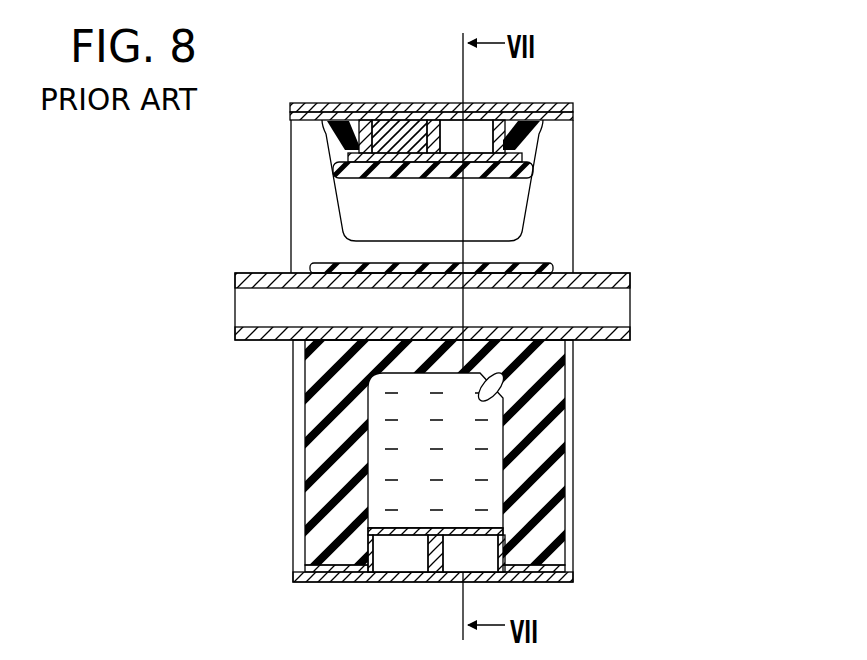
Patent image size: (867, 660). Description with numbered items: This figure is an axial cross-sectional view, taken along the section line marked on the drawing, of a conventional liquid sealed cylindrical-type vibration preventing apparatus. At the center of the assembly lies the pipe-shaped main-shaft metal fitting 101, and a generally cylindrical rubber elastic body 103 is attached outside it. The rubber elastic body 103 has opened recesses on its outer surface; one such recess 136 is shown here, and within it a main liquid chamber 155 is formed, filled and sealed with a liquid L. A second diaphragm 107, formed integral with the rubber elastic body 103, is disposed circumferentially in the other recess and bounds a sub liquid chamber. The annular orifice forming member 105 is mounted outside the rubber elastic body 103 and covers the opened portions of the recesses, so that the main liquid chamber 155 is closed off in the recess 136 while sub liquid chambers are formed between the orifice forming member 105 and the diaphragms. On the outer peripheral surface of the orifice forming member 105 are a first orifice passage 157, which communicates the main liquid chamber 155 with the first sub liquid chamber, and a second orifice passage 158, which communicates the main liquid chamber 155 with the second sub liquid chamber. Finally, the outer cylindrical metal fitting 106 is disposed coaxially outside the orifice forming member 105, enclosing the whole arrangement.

The main-shaft metal fitting 101 is at (590, 288).
The rubber elastic body 103 is at (540, 452).
The orifice forming member 105 is at (428, 518).
The outer cylindrical metal fitting 106 is at (345, 110).
The second diaphragm 107 is at (378, 210).
The recess 136 is at (494, 389).
The main liquid chamber 155 is at (392, 400).
The first orifice passage 157 is at (480, 130).
The second orifice passage 158 is at (414, 125).
The liquid L is at (414, 426).